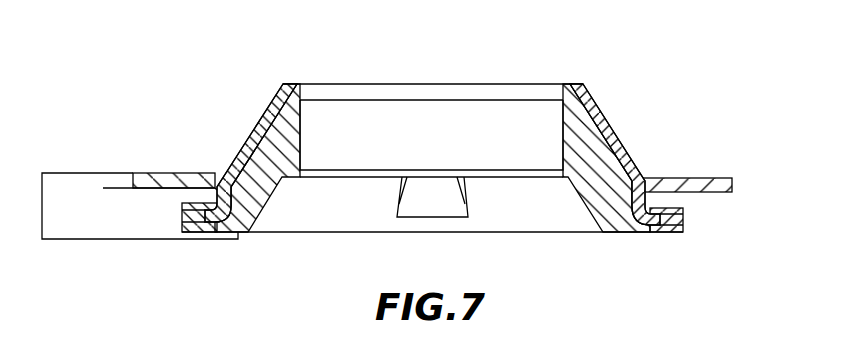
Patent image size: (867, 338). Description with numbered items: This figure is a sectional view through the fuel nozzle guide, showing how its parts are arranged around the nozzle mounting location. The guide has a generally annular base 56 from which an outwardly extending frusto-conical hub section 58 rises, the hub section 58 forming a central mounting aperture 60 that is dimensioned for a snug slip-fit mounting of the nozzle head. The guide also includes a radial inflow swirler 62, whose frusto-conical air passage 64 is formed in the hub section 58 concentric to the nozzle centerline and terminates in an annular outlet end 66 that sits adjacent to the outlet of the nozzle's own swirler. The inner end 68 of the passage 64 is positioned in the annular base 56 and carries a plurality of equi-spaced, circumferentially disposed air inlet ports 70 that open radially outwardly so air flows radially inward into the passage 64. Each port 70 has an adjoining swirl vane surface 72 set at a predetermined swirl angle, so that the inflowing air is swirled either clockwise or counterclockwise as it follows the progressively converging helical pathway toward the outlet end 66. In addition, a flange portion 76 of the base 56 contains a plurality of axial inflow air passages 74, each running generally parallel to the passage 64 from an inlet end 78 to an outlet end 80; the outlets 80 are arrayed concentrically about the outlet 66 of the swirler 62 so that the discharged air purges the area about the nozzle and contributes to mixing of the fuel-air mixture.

The annular base 56 is at (122, 243).
The frusto-conical hub section 58 is at (632, 150).
The central mounting aperture 60 is at (306, 134).
The radial inflow swirler 62 is at (688, 223).
The frusto-conical air passage 64 is at (266, 107).
The annular outlet end 66 is at (289, 94).
The inner end 68 is at (672, 233).
The air inlet ports 70 is at (181, 216).
The swirl vane surface 72 is at (193, 220).
The axial inflow air passages 74 is at (214, 182).
The flange portion 76 is at (149, 182).
The inlet end 78 is at (648, 187).
The outlet end 80 is at (655, 180).